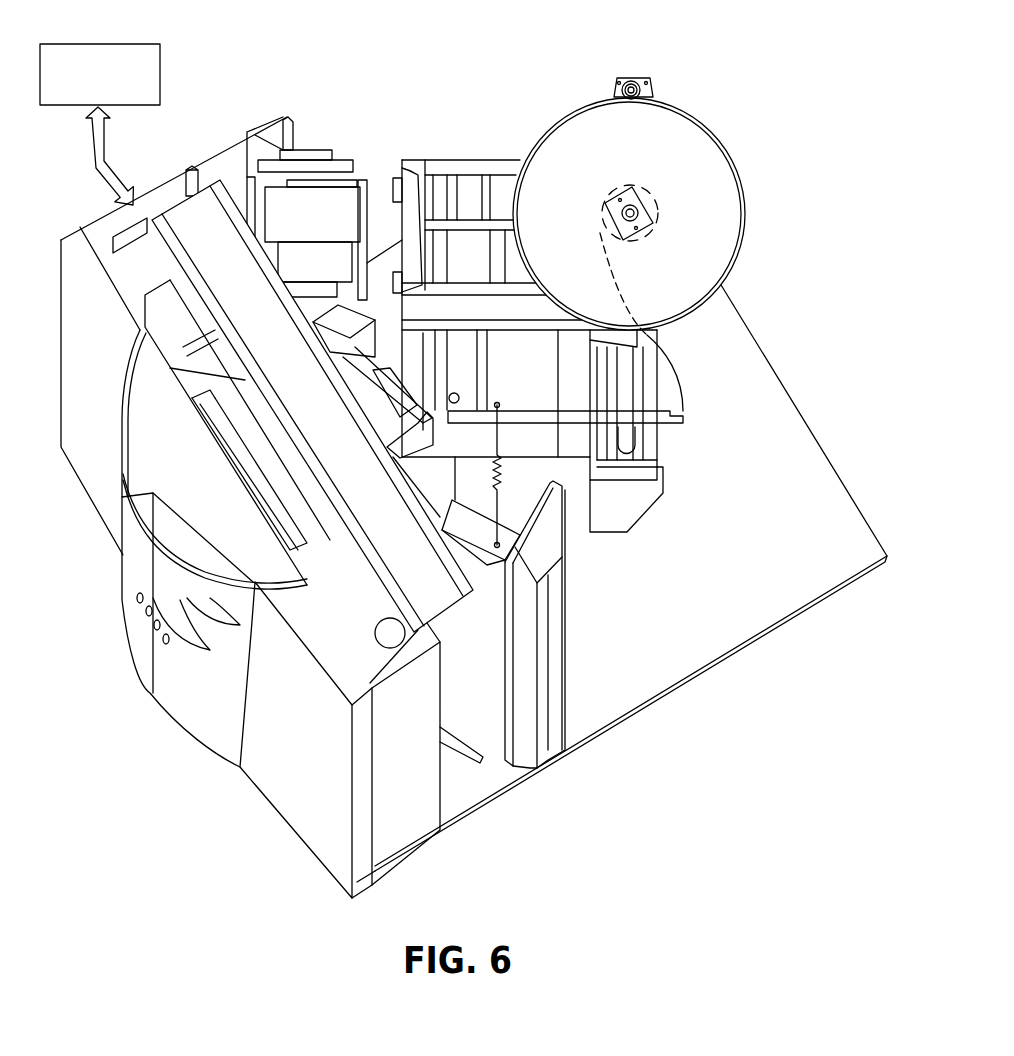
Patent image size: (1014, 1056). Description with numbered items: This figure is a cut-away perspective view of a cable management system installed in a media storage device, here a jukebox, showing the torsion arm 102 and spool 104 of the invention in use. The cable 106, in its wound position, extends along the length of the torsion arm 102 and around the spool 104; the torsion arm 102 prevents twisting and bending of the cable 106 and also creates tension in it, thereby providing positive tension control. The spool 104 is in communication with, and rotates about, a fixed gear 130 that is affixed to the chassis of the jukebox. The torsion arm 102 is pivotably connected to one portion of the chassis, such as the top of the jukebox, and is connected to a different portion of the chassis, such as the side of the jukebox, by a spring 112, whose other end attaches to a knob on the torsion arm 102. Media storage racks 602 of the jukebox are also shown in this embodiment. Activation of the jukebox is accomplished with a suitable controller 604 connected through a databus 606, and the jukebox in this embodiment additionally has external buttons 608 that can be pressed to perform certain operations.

The controller 604 is at (100, 44).
The databus 606 is at (110, 137).
The media storage racks 602 is at (358, 195).
The fixed gear 130 is at (745, 213).
The spool 104 is at (648, 198).
The cable 106 is at (682, 362).
The torsion arm 102 is at (670, 419).
The spring 112 is at (497, 503).
The external buttons 608 is at (137, 600).